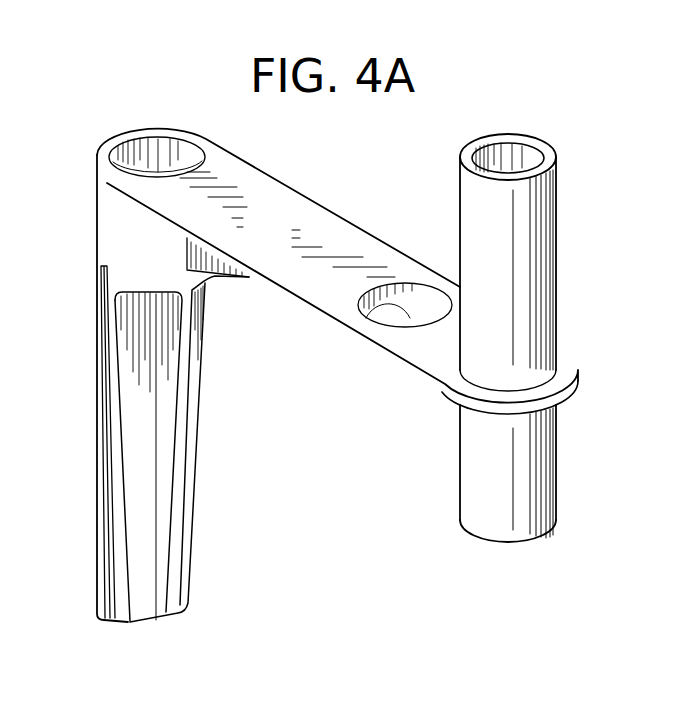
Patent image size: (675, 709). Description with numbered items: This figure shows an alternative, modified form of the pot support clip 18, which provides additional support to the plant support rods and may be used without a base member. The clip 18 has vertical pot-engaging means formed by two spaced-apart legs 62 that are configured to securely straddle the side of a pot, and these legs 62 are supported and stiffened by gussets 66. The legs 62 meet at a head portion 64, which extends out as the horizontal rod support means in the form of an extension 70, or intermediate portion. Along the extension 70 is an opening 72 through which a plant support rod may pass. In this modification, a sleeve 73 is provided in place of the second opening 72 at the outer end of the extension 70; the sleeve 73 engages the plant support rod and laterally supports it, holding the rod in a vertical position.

The pot support clip 18 is at (329, 390).
The legs 62 is at (106, 571).
The head portion 64 is at (102, 178).
The gussets 66 is at (175, 444).
The extension 70 is at (347, 245).
The opening 72 is at (372, 318).
The sleeve 73 is at (542, 267).